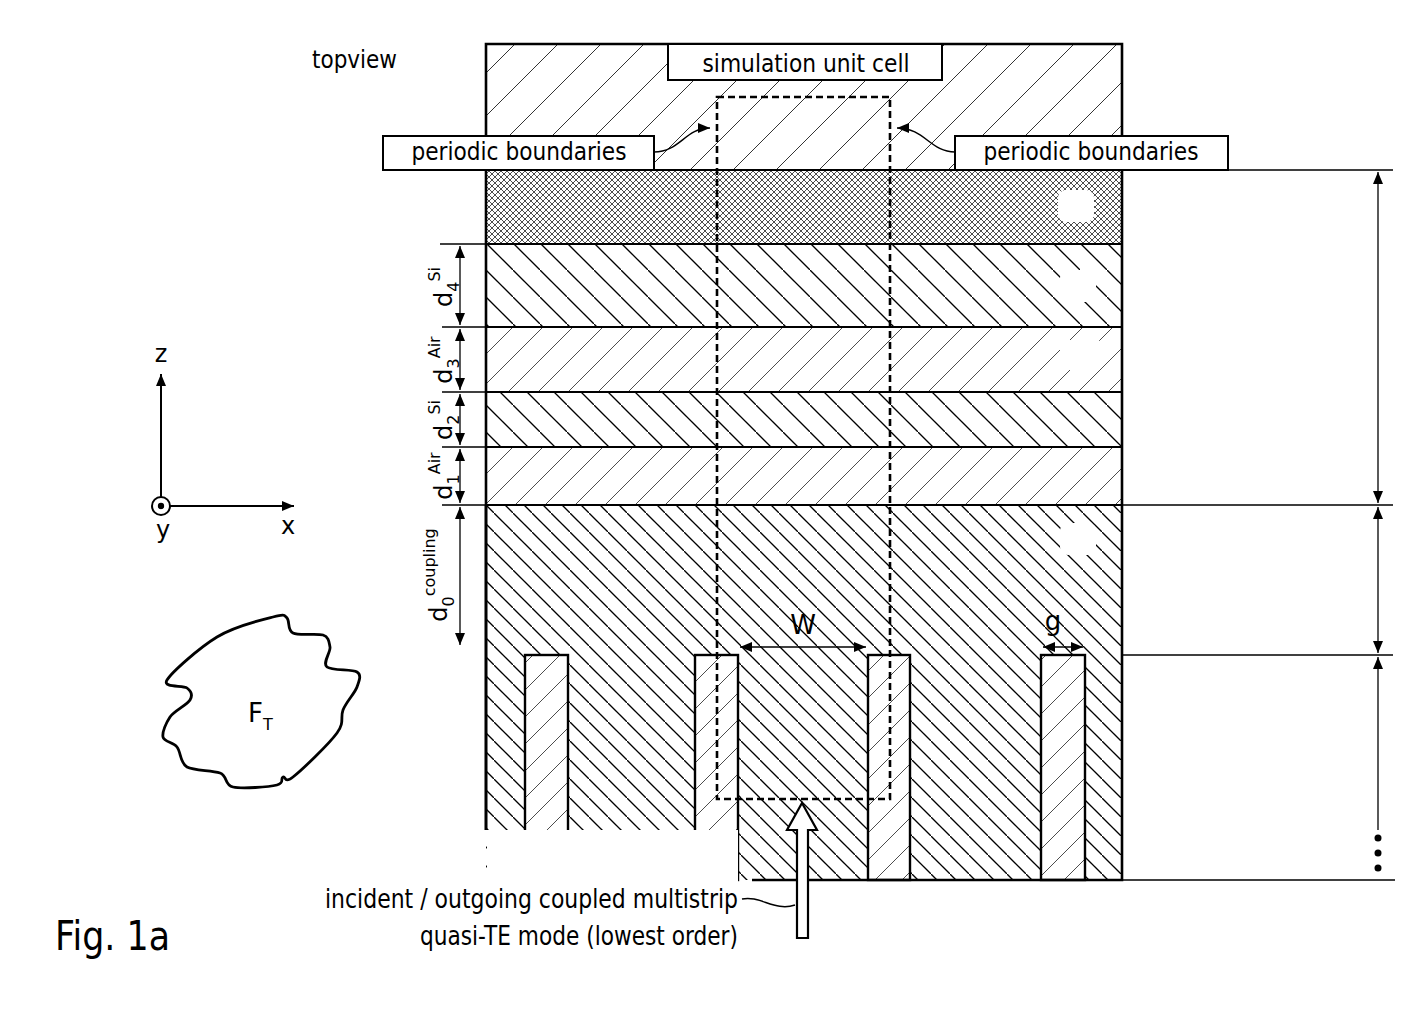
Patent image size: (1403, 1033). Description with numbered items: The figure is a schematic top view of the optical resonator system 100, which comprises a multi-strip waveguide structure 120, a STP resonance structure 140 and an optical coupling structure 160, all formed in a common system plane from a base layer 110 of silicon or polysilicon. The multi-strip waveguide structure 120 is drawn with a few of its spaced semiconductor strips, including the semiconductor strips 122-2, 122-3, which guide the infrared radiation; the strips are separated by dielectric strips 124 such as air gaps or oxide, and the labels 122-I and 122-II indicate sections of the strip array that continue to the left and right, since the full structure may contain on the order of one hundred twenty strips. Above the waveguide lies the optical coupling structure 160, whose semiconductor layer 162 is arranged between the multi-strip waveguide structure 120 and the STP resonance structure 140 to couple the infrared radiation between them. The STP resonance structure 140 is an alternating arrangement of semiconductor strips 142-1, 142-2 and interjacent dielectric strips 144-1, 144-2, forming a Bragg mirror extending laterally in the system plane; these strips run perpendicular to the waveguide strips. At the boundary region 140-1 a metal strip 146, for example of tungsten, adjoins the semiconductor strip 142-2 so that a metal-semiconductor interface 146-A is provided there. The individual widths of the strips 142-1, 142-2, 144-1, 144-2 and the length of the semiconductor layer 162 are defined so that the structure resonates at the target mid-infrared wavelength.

The optical resonator system 100 is at (1338, 73).
The base layer 110 is at (478, 692).
The multi-strip waveguide structure 120 is at (1330, 772).
The waveguide strip section I 122-I is at (650, 871).
The waveguide strip section II 122-II is at (1213, 857).
The semiconductor strip 122-2 is at (853, 872).
The semiconductor strip 122-3 is at (968, 875).
The dielectric strip 124 is at (538, 777).
The STP resonance structure 140 is at (1340, 338).
The boundary region 140-1 is at (430, 243).
The semiconductor strip 142-1 is at (1122, 420).
The semiconductor strip 142-2 is at (1122, 286).
The dielectric strip 144-1 is at (1122, 475).
The dielectric strip 144-2 is at (1122, 358).
The metal strip 146 is at (1128, 180).
The metal-semiconductor interface 146-A is at (1102, 238).
The optical coupling structure 160 is at (1302, 575).
The semiconductor layer 162 is at (1122, 605).